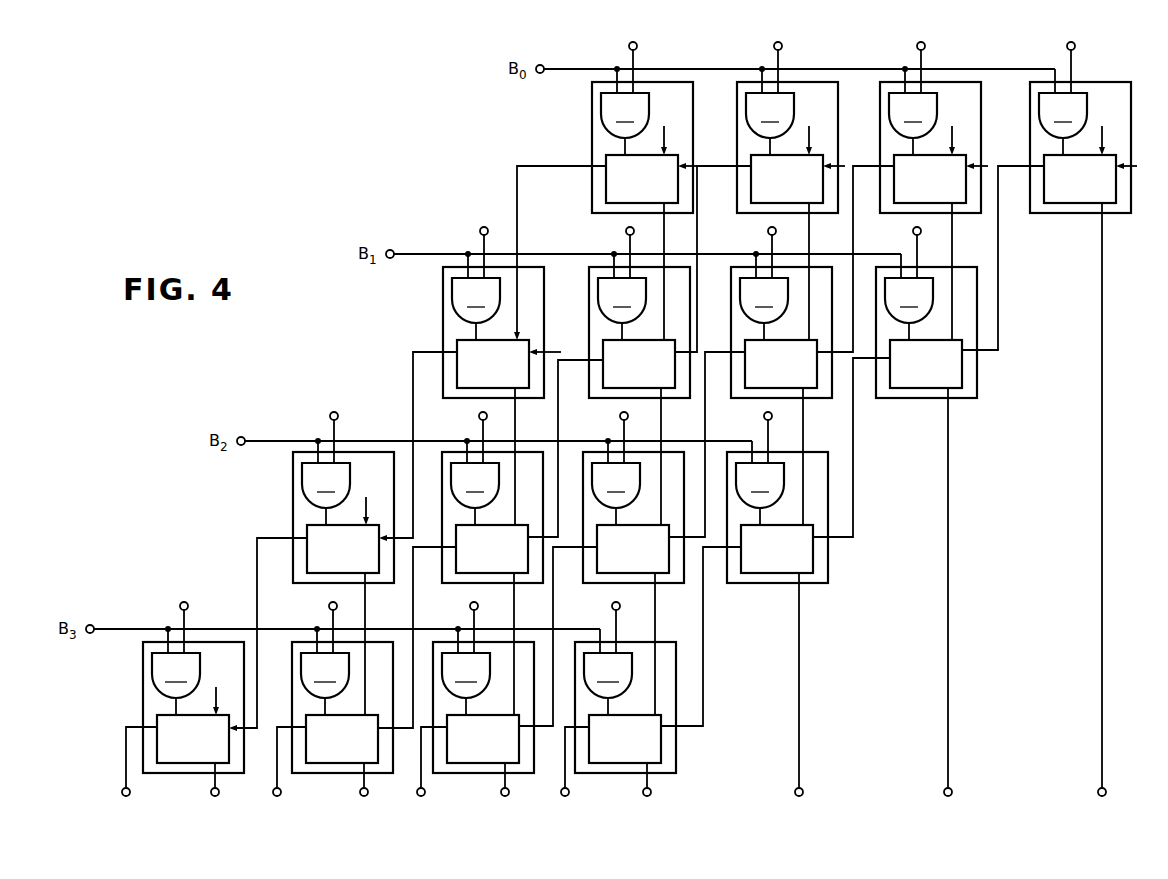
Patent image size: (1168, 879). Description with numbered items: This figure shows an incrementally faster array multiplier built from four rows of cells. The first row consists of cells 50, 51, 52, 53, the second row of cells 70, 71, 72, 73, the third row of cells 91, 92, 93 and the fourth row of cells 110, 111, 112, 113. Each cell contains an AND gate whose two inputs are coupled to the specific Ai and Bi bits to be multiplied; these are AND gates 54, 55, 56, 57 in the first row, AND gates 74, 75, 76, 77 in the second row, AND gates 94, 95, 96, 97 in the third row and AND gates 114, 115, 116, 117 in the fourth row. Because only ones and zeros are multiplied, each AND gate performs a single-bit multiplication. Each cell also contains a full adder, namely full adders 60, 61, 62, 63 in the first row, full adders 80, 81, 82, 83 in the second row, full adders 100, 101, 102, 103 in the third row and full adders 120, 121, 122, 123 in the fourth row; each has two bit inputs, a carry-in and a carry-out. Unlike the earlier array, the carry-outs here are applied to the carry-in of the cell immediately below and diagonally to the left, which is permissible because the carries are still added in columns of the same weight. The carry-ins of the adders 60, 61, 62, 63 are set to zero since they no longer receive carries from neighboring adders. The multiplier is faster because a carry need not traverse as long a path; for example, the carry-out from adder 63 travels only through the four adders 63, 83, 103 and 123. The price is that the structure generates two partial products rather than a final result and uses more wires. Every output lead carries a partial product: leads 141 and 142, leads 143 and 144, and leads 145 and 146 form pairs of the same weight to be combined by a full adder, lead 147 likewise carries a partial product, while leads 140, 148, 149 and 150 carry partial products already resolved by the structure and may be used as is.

The cell 50 is at (612, 189).
The cell 51 is at (765, 195).
The cell 52 is at (908, 195).
The cell 53 is at (1055, 413).
The AND gate 54 is at (625, 115).
The AND gate 55 is at (770, 115).
The AND gate 56 is at (913, 115).
The AND gate 57 is at (1063, 115).
The full adder 60 is at (608, 190).
The full adder 61 is at (753, 190).
The full adder 62 is at (906, 190).
The full adder 63 is at (1050, 190).
The cell 70 is at (475, 382).
The cell 71 is at (609, 380).
The cell 72 is at (750, 380).
The cell 73 is at (900, 506).
The AND gate 74 is at (476, 300).
The AND gate 75 is at (622, 300).
The AND gate 76 is at (764, 300).
The AND gate 77 is at (909, 300).
The full adder 80 is at (473, 382).
The full adder 81 is at (619, 382).
The full adder 82 is at (771, 380).
The full adder 83 is at (922, 380).
The cell 91 is at (311, 570).
The cell 92 is at (460, 568).
The cell 93 is at (680, 567).
The AND gate 94 is at (326, 485).
The AND gate 95 is at (475, 485).
The AND gate 96 is at (616, 485).
The AND gate 97 is at (744, 598).
The full adder 100 is at (321, 567).
The full adder 101 is at (478, 567).
The full adder 102 is at (613, 567).
The full adder 103 is at (777, 567).
The cell 110 is at (170, 686).
The cell 111 is at (329, 684).
The cell 112 is at (486, 699).
The cell 113 is at (632, 699).
The AND gate 114 is at (176, 675).
The AND gate 115 is at (325, 675).
The AND gate 116 is at (466, 675).
The AND gate 117 is at (608, 675).
The full adder 120 is at (157, 721).
The full adder 121 is at (308, 720).
The full adder 122 is at (462, 761).
The full adder 123 is at (604, 761).
The lead 140 is at (119, 764).
The lead 141 is at (199, 782).
The lead 142 is at (273, 764).
The lead 143 is at (347, 782).
The lead 144 is at (414, 764).
The lead 145 is at (488, 782).
The lead 146 is at (560, 764).
The lead 147 is at (631, 782).
The lead 148 is at (781, 792).
The lead 149 is at (931, 792).
The lead 150 is at (1084, 792).